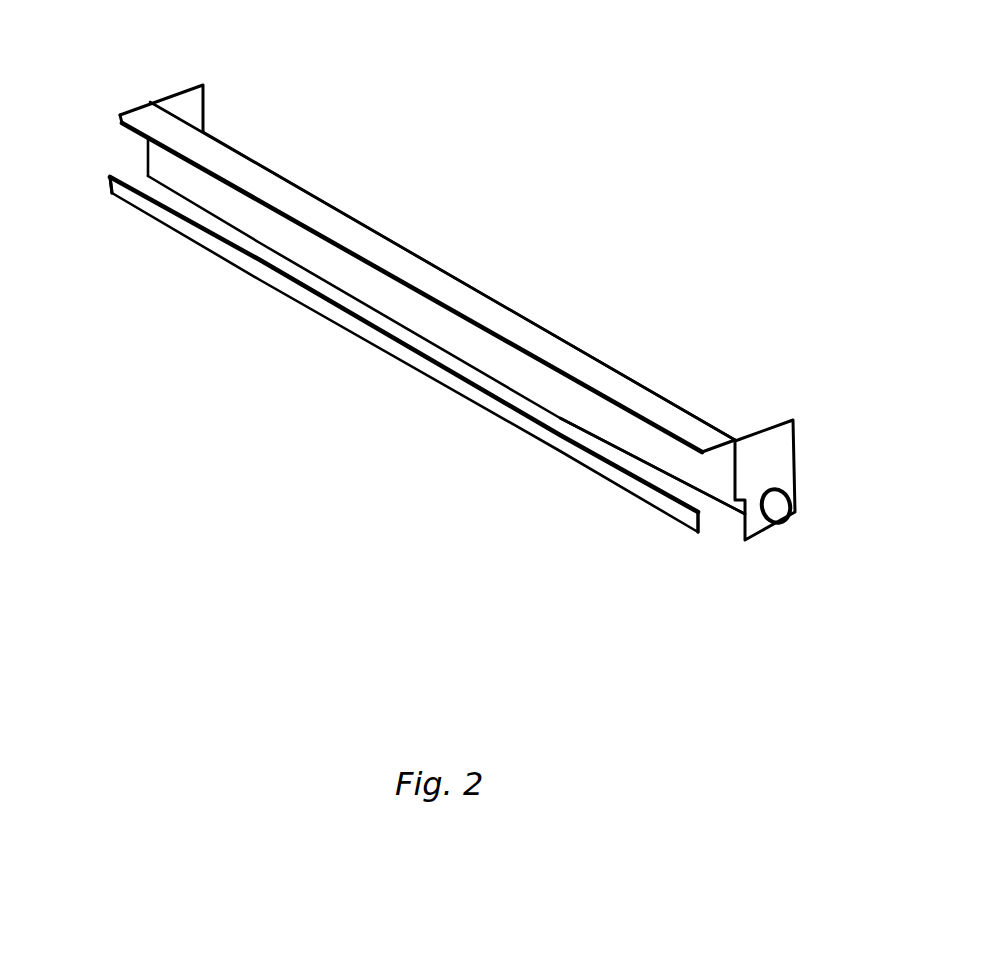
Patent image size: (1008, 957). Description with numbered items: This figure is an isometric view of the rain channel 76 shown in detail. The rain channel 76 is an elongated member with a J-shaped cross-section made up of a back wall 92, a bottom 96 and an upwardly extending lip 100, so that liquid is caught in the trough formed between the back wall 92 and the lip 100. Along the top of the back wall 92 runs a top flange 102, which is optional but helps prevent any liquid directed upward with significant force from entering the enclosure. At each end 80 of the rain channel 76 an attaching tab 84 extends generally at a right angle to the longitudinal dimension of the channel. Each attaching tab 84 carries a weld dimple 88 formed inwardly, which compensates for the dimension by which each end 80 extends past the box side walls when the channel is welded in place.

The rain channel 76 is at (541, 329).
The end 80 is at (135, 180).
The attaching tab 84 is at (195, 108).
The weld dimple 88 is at (796, 512).
The back wall 92 is at (440, 324).
The bottom 96 is at (642, 476).
The upwardly extending lip 100 is at (483, 402).
The top flange 102 is at (418, 272).